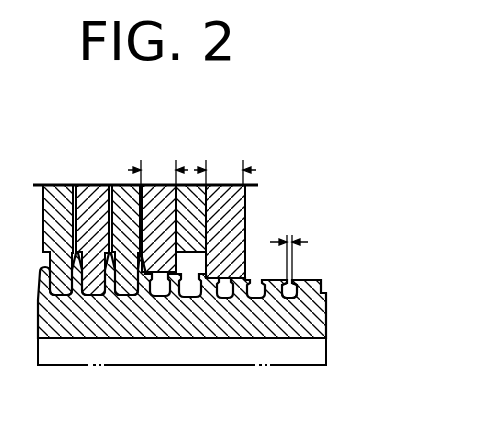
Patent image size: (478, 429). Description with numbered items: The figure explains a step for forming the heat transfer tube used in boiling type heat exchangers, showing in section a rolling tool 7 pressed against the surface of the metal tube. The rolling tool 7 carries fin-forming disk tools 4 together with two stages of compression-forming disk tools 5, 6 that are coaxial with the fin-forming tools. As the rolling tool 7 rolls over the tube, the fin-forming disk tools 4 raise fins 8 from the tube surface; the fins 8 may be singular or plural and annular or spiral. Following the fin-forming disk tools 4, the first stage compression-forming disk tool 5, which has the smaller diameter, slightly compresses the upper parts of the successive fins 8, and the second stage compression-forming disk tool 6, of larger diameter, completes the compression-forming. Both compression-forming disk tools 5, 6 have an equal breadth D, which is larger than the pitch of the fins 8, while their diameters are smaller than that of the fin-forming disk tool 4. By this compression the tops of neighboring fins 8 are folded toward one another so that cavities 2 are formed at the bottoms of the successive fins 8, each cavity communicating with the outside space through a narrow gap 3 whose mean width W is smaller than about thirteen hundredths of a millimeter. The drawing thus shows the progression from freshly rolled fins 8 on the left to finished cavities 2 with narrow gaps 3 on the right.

The cavity 2 is at (307, 285).
The narrow gap 3 is at (293, 281).
The fin-forming disk tool 4 is at (57, 243).
The first stage compression-forming disk tool 5 is at (153, 227).
The second stage compression-forming disk tool 6 is at (227, 225).
The rolling tool 7 is at (128, 185).
The fin 8 is at (60, 353).
The breadth D is at (192, 168).
The groove width dimension W is at (289, 246).